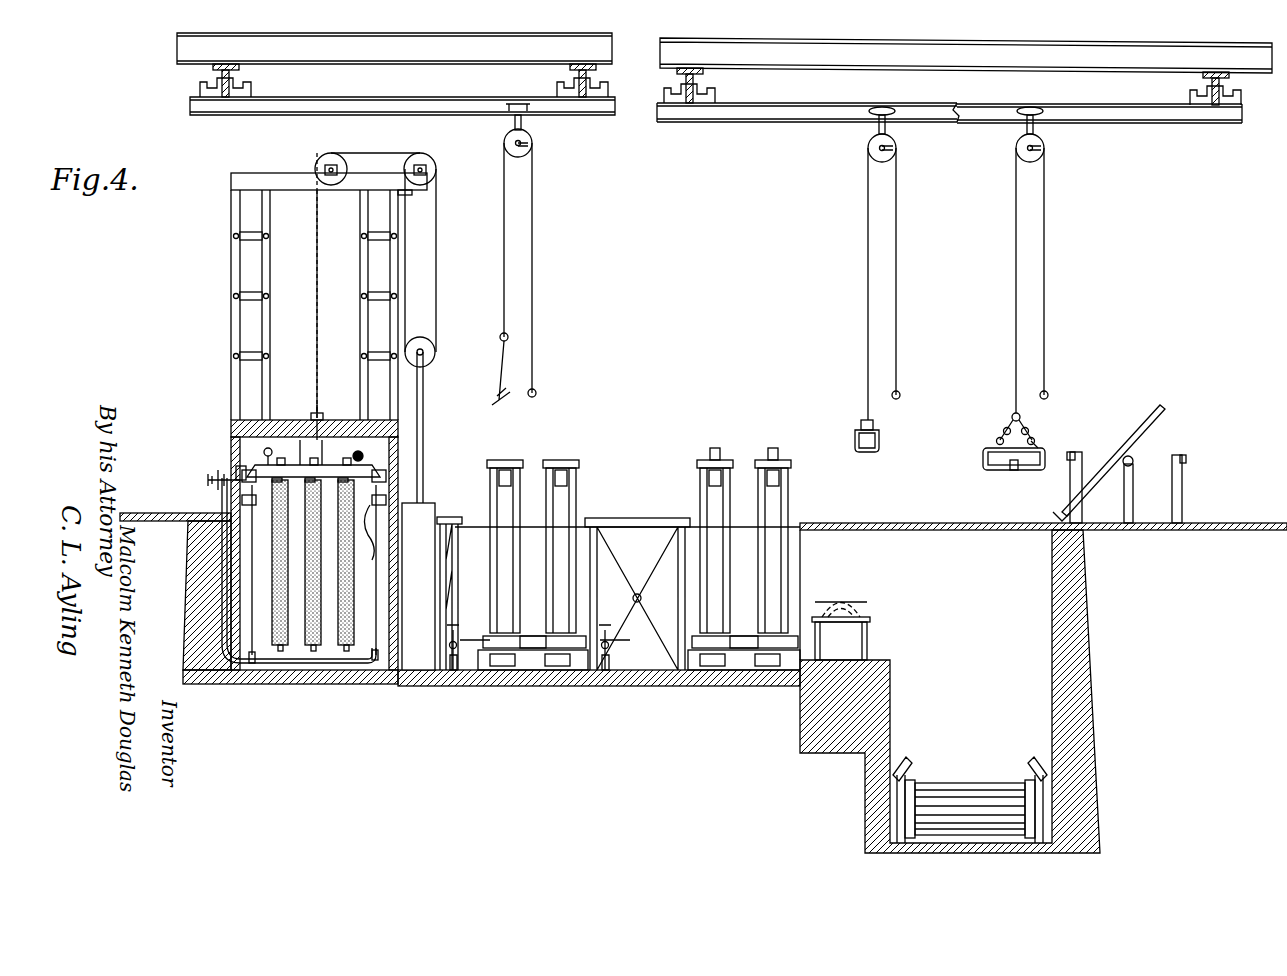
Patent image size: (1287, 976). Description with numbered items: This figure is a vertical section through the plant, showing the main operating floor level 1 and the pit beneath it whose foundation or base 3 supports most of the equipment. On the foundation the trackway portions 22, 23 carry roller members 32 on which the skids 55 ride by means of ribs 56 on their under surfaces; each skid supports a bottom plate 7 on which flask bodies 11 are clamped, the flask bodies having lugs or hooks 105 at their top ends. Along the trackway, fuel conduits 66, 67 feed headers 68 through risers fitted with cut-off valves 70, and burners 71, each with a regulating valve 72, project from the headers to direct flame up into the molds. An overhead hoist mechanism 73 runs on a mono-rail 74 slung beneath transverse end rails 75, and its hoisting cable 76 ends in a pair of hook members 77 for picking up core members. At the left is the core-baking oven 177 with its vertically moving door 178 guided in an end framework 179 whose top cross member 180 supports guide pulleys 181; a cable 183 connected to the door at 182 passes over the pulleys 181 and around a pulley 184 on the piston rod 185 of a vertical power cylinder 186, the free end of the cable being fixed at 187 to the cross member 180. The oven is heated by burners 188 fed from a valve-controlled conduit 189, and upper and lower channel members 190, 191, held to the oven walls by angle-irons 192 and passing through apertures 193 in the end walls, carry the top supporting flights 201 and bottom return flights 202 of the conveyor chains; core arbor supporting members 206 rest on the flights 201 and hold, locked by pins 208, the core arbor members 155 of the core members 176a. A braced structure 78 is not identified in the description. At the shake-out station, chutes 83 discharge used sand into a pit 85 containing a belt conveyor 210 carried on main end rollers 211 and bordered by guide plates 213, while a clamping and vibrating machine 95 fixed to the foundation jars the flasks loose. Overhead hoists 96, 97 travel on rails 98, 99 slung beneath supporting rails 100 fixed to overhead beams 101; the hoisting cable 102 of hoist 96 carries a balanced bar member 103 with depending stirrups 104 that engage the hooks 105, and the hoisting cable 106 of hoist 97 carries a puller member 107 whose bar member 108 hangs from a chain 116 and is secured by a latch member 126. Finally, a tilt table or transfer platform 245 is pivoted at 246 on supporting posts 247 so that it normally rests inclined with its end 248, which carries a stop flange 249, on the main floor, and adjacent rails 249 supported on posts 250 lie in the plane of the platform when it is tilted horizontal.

The main operating floor level 1 is at (892, 523).
The foundation or base 3 is at (650, 672).
The bottom plate 7 is at (530, 636).
The flask body 11 is at (490, 490).
The trackway portion 22 is at (540, 672).
The trackway portion 23 is at (738, 672).
The roller member 32 is at (500, 666).
The skid or truck 55 is at (486, 638).
The rib 56 is at (700, 660).
The conduit 66 is at (453, 672).
The conduit 67 is at (607, 672).
The header 68 is at (449, 645).
The control or cut-off valve 70 is at (449, 658).
The burner 71 is at (465, 638).
The regulating or control valve 72 is at (452, 630).
The overhead hoist mechanism 73 is at (530, 140).
The mono-rail 74 is at (602, 116).
The transverse end rail 75 is at (212, 73).
The hoisting cable 76 is at (503, 249).
The hook member 77 is at (500, 399).
The braced tower 78 is at (628, 518).
The chute 83 is at (880, 695).
The pit 85 is at (970, 783).
The clamping and vibrating machine 95 is at (858, 645).
The overhead hoist 96 is at (868, 140).
The overhead hoist 97 is at (1044, 140).
The rail 98 is at (770, 112).
The rail 99 is at (1126, 115).
The supporting rail 100 is at (704, 78).
The overhead beam 101 is at (808, 50).
The hoisting cable 102 is at (866, 327).
The balanced bar member 103 is at (874, 420).
The stirrup or hook 104 is at (880, 436).
The lug or hook 105 is at (546, 478).
The hoisting cable 106 is at (1015, 305).
The puller member 107 is at (1032, 437).
The bar member 108 is at (1002, 452).
The chain 116 is at (1003, 432).
The locking or latch member 126 is at (1016, 470).
The core arbor member 155 is at (328, 440).
The core member 176a is at (313, 592).
The drying or baking oven 177 is at (231, 430).
The vertically moving door 178 is at (290, 420).
The vertical end framework 179 is at (231, 290).
The horizontal top cross member 180 is at (350, 190).
The guide pulley 181 is at (331, 158).
The cable connection 182 is at (319, 410).
The cable 183 is at (317, 330).
The pulley 184 is at (432, 360).
The plunger or piston rod 185 is at (425, 445).
The power cylinder 186 is at (420, 538).
The cable fixing point 187 is at (410, 194).
The burner 188 is at (250, 663).
The valve controlled conduit 189 is at (208, 480).
The upper conveyor chain supporting member 190 is at (240, 470).
The lower conveyor chain supporting member 191 is at (222, 548).
The angle-iron 192 is at (225, 500).
The aperture 193 is at (245, 450).
The top or supporting flight 201 is at (268, 448).
The bottom or return flight 202 is at (374, 545).
The core arbor supporting member 206 is at (355, 455).
The pin 208 is at (313, 458).
The conveyor 210 is at (972, 783).
The main end roller 211 is at (1015, 803).
The guide plate 213 is at (910, 762).
The tilt table or transfer platform 245 is at (1165, 410).
The pivot 246 is at (1134, 460).
The supporting post 247 is at (1133, 495).
The end of platform 248 is at (1070, 523).
The rails 249 is at (1076, 452).
The post or column 250 is at (1183, 492).